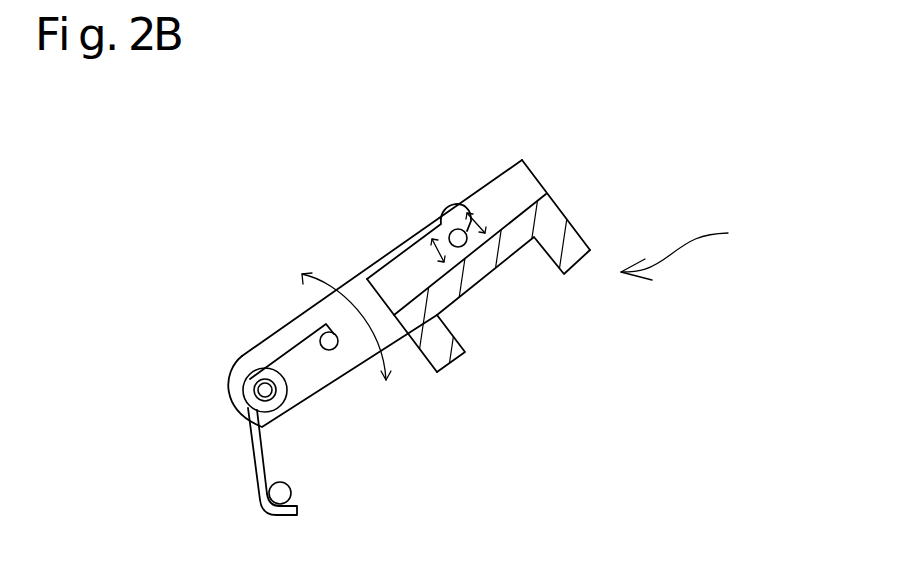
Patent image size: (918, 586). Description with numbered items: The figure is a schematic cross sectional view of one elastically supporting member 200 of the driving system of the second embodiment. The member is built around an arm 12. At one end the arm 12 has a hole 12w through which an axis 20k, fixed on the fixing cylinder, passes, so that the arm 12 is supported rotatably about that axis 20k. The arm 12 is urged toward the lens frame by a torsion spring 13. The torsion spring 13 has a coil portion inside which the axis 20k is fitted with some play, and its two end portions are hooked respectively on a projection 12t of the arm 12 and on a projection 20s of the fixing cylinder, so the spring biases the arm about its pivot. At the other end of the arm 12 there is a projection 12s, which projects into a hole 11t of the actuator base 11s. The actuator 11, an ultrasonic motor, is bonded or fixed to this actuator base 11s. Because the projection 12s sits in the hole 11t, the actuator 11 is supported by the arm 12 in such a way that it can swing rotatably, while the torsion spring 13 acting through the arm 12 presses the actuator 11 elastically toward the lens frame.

The elastically supporting member 200 is at (693, 248).
The actuator 11 is at (569, 258).
The actuator base 11s is at (530, 178).
The hole of the actuator base 11t is at (452, 229).
The arm 12 is at (296, 317).
The projection of the arm 12s is at (440, 210).
The projection of the arm 12t is at (329, 350).
The hole of the arm 12w is at (258, 388).
The axis 20k is at (278, 395).
The projection of the fixing cylinder 20s is at (280, 494).
The torsion spring 13 is at (262, 513).